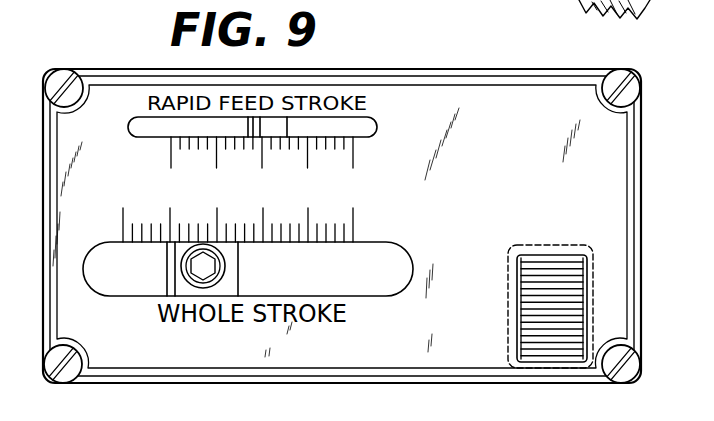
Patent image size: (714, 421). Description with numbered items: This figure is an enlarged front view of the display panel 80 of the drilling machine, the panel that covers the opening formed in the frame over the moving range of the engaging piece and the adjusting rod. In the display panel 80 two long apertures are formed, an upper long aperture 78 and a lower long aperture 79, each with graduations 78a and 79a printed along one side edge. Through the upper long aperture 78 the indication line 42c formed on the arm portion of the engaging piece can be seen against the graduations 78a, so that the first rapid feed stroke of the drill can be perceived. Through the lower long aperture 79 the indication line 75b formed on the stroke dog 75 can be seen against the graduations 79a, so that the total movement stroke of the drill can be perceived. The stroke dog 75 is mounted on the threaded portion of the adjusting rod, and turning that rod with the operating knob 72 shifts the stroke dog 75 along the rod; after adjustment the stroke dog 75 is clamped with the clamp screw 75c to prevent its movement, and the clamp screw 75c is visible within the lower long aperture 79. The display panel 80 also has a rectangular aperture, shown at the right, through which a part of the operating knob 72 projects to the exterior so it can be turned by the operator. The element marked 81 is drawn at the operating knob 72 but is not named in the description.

The display panel 80 is at (450, 97).
The upper long aperture 78 is at (349, 133).
The graduations 78a is at (170, 160).
The indication line 42c is at (247, 128).
The lower long aperture 79 is at (390, 245).
The graduations 79a is at (123, 218).
The stroke dog 75 is at (238, 252).
The indication line 75b is at (173, 268).
The clamp screw 75c is at (206, 268).
The operating knob 72 is at (530, 310).
The louvers 81 is at (540, 256).